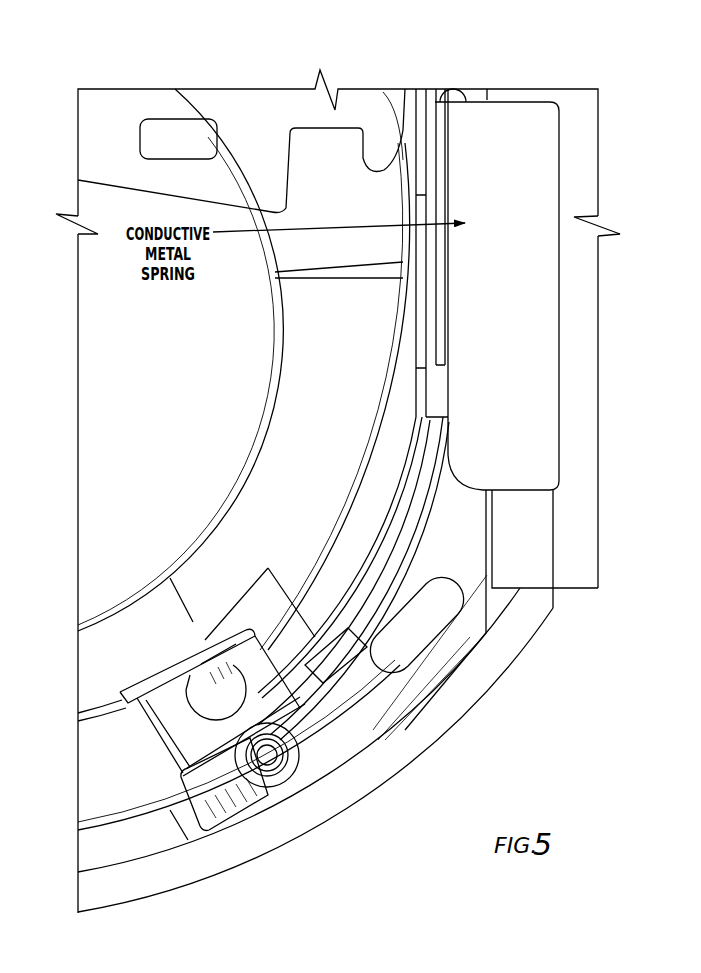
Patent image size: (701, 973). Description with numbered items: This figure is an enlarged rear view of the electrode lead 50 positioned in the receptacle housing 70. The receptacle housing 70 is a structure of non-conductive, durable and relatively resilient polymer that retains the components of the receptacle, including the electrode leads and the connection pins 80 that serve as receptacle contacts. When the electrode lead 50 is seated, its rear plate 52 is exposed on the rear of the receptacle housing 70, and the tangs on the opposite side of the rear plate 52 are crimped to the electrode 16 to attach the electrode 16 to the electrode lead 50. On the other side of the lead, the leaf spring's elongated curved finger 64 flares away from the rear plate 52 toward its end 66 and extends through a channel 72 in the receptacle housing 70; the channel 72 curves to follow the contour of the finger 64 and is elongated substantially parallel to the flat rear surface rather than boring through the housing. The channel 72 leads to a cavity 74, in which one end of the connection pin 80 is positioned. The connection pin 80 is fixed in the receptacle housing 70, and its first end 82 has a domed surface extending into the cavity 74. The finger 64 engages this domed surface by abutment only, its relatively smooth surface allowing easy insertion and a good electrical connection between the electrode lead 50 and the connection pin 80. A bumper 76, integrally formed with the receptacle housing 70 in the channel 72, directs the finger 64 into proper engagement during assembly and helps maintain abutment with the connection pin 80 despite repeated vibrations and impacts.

The electrode 16 is at (598, 303).
The electrode lead 50 is at (520, 205).
The rear plate 52 is at (520, 398).
The receptacle housing 70 is at (352, 152).
The channel 72 is at (415, 547).
The finger 64 is at (365, 590).
The bumper 76 is at (342, 662).
The cavity 74 is at (177, 688).
The end of the finger 66 is at (230, 708).
The connection pin 80 is at (363, 797).
The first end 82 is at (270, 760).